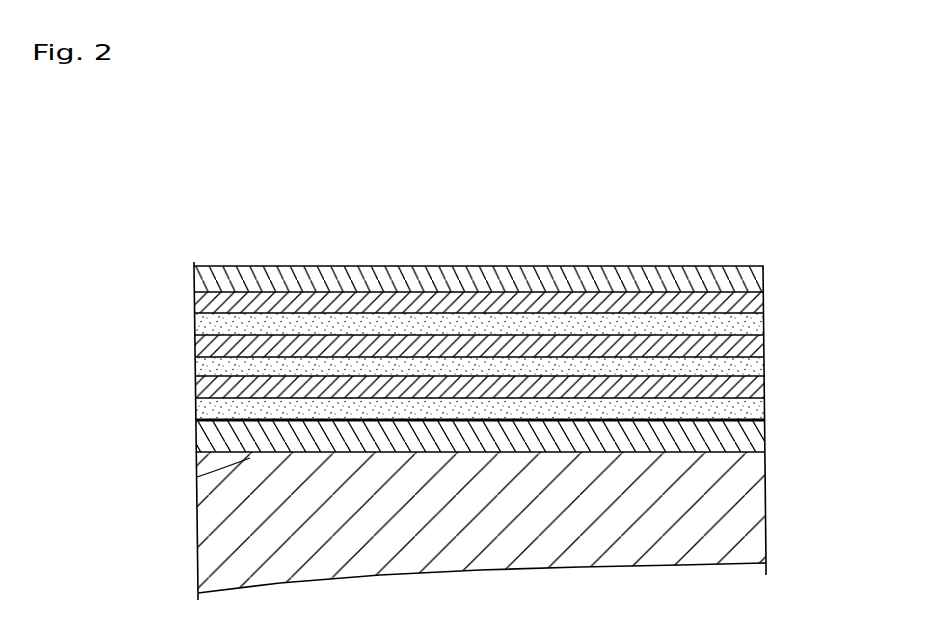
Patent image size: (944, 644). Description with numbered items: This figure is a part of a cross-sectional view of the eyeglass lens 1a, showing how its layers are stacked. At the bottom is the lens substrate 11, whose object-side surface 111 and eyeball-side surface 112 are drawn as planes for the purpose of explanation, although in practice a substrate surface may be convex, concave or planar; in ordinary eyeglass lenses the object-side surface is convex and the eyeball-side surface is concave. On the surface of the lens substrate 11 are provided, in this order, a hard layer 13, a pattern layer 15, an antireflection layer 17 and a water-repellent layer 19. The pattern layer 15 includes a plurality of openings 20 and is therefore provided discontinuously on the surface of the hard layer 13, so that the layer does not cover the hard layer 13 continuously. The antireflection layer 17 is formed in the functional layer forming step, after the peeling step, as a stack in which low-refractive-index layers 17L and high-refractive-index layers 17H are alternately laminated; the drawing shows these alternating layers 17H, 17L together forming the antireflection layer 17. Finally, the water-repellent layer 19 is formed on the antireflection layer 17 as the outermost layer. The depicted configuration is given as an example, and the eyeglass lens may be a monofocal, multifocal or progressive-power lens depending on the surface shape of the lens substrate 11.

The optical element 1a is at (203, 204).
The lens substrate 11 is at (716, 496).
The object-side surface 111 is at (740, 441).
The eyeball-side surface 112 is at (703, 568).
The hard layer 13 is at (204, 443).
The pattern layer 15 is at (765, 406).
The antireflection layer 17 is at (500, 357).
The high-refractive-index layer 17H is at (765, 300).
The low-refractive-index layer 17L is at (765, 325).
The water-repellent layer 19 is at (765, 278).
The opening 20 is at (197, 477).